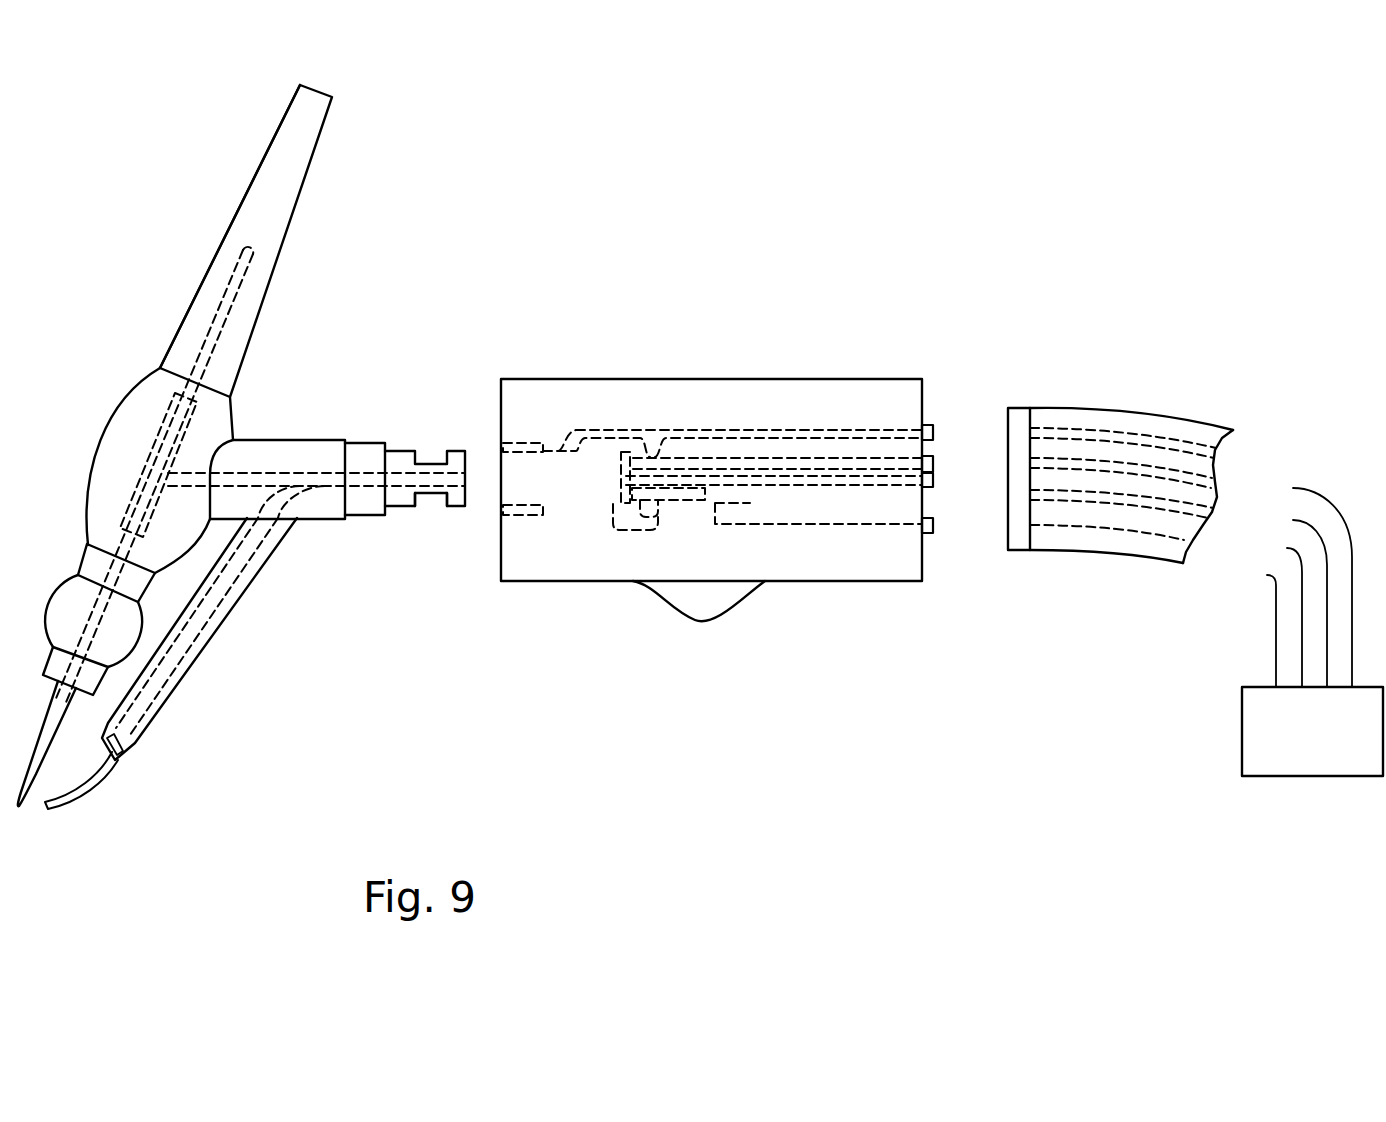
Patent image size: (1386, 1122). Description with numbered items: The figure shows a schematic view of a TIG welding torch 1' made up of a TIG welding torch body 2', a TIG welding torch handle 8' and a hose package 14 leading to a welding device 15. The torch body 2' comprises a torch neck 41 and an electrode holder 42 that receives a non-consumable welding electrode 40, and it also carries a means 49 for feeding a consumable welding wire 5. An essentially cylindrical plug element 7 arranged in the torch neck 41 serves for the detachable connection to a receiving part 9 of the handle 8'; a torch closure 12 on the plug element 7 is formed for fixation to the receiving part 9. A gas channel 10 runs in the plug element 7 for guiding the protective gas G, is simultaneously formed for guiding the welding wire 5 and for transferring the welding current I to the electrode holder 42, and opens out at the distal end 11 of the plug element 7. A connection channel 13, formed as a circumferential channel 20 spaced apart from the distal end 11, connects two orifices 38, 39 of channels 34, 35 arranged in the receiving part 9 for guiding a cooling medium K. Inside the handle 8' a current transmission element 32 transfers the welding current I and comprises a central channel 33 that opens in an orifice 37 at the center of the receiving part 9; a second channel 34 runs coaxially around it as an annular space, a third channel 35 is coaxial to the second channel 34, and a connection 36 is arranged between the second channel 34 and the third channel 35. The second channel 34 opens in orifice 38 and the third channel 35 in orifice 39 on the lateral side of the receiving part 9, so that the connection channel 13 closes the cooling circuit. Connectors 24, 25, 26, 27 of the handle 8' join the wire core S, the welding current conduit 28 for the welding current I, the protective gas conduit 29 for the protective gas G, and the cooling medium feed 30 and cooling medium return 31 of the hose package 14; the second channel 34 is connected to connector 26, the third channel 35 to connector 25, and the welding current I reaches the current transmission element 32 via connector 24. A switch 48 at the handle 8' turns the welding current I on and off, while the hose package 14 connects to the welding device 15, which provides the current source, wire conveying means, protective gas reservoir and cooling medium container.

The TIG welding torch body 2' is at (249, 494).
The torch neck 41 is at (140, 417).
The electrode holder 42 is at (137, 491).
The non-consumable welding electrode 40 is at (33, 768).
The gas channel 10 is at (248, 478).
The torch closure 12 is at (365, 445).
The plug element 7 is at (385, 400).
The connection channel 13 is at (428, 457).
The circumferential channel 20 is at (425, 478).
The distal end 11 is at (460, 517).
The means for feeding a consumable welding wire 49 is at (247, 575).
The consumable welding wire 5 is at (74, 791).
The TIG welding torch 1' is at (241, 435).
The TIG welding torch handle 8' is at (718, 480).
The receiving part 9 is at (522, 477).
The switch 48 is at (668, 605).
The orifice 39 is at (567, 453).
The connection 36 is at (653, 453).
The third channel 35 is at (748, 433).
The second channel 34 is at (793, 467).
The central channel 33 is at (852, 477).
The current transmission element 32 is at (643, 453).
The orifice 37 is at (623, 482).
The orifice 38 is at (607, 507).
The connector 25 is at (930, 427).
The connector 26 is at (933, 458).
The connector 27 is at (933, 488).
The connector 24 is at (930, 533).
The hose package 14 is at (1098, 380).
The protective gas conduit 29 is at (1133, 435).
The cooling medium return 31 is at (1162, 475).
The cooling medium feed 30 is at (1118, 498).
The welding current conduit 28 is at (1095, 525).
The cooling medium K is at (1220, 457).
The protective gas G is at (1213, 518).
The wire core S is at (1294, 617).
The welding current I is at (1200, 547).
The welding device 15 is at (1340, 747).